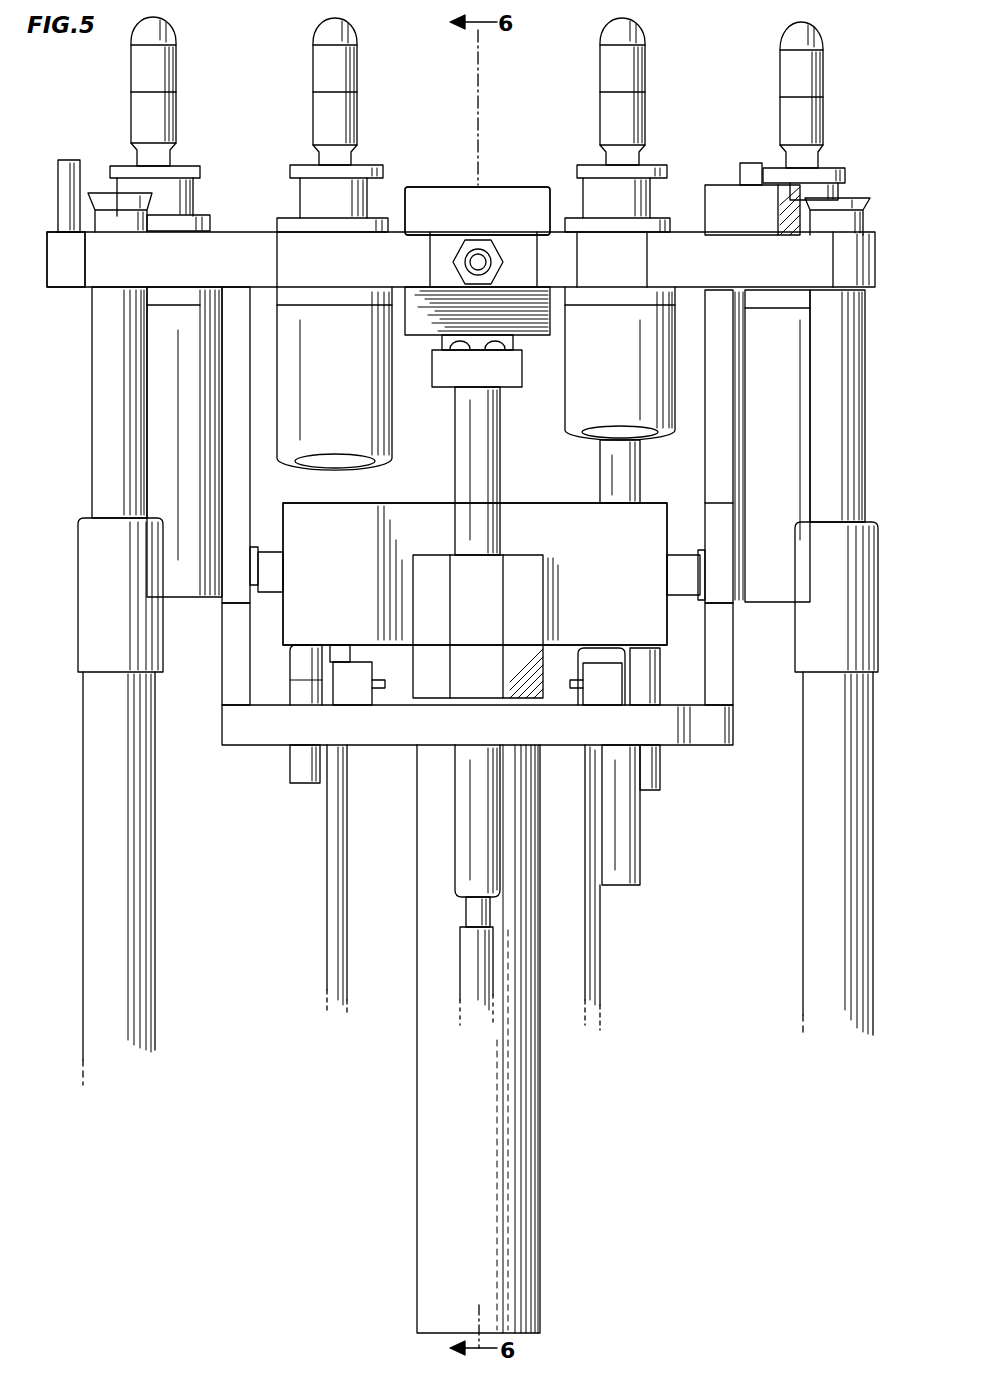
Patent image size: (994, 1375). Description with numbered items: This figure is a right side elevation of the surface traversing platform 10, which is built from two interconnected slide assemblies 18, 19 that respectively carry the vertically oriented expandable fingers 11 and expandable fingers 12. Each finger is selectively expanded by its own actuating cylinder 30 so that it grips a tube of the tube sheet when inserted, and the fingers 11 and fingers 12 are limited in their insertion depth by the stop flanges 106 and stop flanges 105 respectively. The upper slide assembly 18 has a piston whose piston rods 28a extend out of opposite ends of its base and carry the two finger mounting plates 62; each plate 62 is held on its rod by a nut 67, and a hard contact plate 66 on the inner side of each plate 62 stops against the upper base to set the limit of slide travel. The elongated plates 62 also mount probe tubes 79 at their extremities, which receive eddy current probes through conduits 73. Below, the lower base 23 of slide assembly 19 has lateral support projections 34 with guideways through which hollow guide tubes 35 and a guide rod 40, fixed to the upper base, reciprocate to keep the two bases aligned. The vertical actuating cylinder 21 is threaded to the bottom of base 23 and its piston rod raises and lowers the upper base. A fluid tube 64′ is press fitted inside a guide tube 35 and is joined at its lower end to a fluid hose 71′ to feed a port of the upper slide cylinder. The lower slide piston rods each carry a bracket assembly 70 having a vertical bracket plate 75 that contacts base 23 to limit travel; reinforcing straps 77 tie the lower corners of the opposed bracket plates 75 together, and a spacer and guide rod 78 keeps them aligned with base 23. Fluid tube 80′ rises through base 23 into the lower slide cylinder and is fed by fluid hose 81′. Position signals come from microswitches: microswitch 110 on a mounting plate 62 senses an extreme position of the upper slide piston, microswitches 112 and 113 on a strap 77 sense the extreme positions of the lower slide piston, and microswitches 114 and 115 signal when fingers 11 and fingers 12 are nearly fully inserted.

The platform 10 is at (92, 96).
The expandable fingers 11 is at (357, 76).
The expandable fingers 12 is at (177, 74).
The slide assembly 18 is at (504, 189).
The slide assembly 19 is at (400, 502).
The actuating cylinder 21 is at (478, 1039).
The base 23 is at (365, 569).
The piston rods 28a is at (480, 253).
The actuating cylinder 30 is at (183, 396).
The support projections 34 is at (493, 634).
The guide tubes 35 is at (466, 822).
The guide rod 40 is at (632, 838).
The finger mounting plates 62 is at (227, 234).
The fluid tube 64′ is at (490, 917).
The contact plate 66 is at (457, 220).
The nut 67 is at (503, 258).
The bracket assemblies 70 is at (233, 491).
The fluid hose 71′ is at (468, 968).
The conduits 73 is at (88, 832).
The bracket plate 75 is at (228, 651).
The reinforcing straps 77 is at (273, 735).
The spacer and guide rod 78 is at (276, 563).
The probe tubes 79 is at (97, 405).
The fluid tube 80′ is at (342, 648).
The fluid hose 81′ is at (332, 946).
The stop flange 105 is at (193, 167).
The stop flange 106 is at (379, 168).
The microswitch 110 is at (495, 382).
The microswitch 112 is at (352, 695).
The microswitch 113 is at (604, 695).
The microswitch 114 is at (760, 226).
The microswitch 115 is at (66, 274).